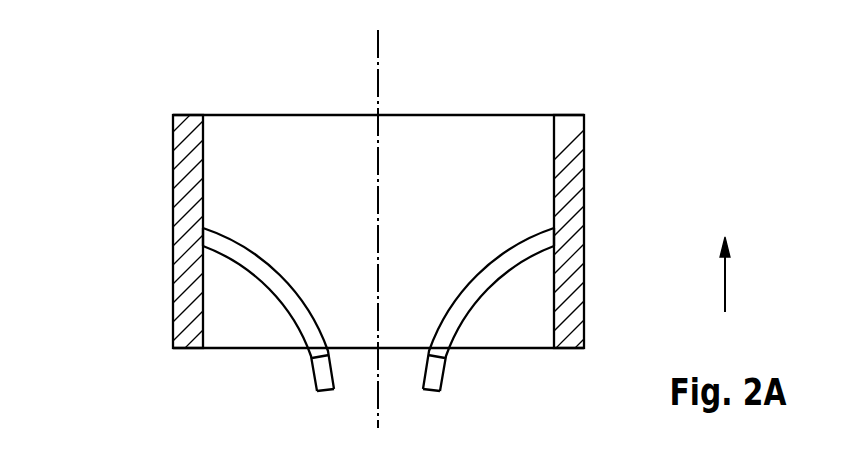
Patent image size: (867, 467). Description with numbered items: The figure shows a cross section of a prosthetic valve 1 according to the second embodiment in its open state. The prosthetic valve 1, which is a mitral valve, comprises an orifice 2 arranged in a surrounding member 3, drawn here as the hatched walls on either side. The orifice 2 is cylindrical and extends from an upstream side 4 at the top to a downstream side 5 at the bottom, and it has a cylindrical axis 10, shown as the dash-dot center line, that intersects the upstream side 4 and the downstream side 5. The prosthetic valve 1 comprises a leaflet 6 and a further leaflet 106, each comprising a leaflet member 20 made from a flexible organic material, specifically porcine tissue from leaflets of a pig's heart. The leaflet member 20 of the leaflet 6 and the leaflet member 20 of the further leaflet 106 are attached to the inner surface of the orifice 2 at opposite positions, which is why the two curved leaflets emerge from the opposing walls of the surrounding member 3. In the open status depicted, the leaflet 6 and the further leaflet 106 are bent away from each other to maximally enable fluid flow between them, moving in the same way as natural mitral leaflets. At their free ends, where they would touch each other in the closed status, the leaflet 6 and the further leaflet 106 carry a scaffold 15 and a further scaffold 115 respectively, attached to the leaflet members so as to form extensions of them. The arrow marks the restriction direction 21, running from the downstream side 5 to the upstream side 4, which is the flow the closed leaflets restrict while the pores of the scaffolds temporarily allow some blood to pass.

The prosthetic valve 1 is at (135, 145).
The orifice 2 is at (289, 152).
The surrounding member 3 is at (187, 198).
The upstream side 4 is at (228, 115).
The downstream side 5 is at (222, 348).
The leaflet 6 is at (293, 315).
The cylindrical axis 10 is at (378, 43).
The scaffold 15 is at (325, 373).
The leaflet member 20 is at (238, 248).
The restriction direction 21 is at (725, 282).
The further leaflet 106 is at (473, 300).
The further scaffold 115 is at (433, 373).